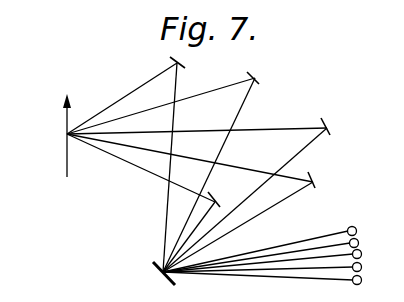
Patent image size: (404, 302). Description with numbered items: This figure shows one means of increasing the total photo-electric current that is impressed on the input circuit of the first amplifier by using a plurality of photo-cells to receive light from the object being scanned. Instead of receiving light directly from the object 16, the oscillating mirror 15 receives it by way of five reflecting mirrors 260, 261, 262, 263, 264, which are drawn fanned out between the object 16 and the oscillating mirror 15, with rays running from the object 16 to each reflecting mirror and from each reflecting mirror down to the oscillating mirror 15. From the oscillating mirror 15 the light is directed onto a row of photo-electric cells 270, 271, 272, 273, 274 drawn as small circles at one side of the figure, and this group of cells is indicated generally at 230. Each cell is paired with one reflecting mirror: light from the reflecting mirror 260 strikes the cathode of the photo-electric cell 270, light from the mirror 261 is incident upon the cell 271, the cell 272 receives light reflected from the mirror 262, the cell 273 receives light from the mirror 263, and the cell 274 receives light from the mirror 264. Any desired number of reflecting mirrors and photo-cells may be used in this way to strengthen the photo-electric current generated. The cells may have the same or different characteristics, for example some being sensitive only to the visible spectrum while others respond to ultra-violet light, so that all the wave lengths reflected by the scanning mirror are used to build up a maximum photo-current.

The oscillating mirror 15 is at (163, 280).
The object 16 is at (65, 151).
The receiving arrangement 230 is at (403, 83).
The reflecting mirror 260 is at (183, 63).
The reflecting mirror 261 is at (258, 77).
The reflecting mirror 262 is at (215, 200).
The reflecting mirror 263 is at (329, 126).
The reflecting mirror 264 is at (313, 179).
The photo-electric cell 270 is at (361, 279).
The photo-electric cell 271 is at (361, 267).
The photo-electric cell 272 is at (361, 253).
The photo-electric cell 273 is at (358, 241).
The photo-electric cell 274 is at (356, 229).